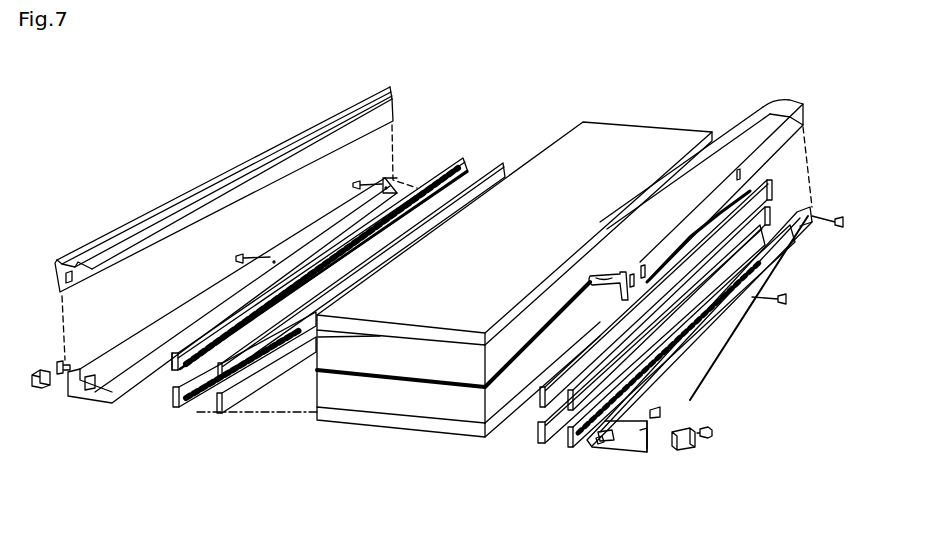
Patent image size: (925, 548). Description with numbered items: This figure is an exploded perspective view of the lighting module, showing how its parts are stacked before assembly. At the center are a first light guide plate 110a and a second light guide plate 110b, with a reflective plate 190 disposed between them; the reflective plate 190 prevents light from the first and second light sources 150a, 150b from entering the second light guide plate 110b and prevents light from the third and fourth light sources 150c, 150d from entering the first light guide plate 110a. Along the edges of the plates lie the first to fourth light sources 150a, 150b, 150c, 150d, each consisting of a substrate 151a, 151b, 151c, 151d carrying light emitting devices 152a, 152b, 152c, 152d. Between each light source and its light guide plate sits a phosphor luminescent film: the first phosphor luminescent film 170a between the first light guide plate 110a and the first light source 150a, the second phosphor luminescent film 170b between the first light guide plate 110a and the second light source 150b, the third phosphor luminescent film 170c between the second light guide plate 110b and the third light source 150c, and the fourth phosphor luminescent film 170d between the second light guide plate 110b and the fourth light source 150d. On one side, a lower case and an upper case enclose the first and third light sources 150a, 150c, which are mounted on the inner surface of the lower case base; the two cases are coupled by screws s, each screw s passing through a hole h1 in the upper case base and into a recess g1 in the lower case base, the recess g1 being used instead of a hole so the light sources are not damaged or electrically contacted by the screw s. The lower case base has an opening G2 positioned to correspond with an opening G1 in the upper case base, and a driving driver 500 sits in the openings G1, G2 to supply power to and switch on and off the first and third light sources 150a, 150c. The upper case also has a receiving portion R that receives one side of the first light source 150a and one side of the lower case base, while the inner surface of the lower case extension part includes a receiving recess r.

The first light guide plate 110a is at (380, 336).
The second light guide plate 110b is at (320, 413).
The first light source 150a is at (602, 295).
The substrate 151a is at (542, 390).
The light emitting device 152a is at (568, 395).
The second light source 150b is at (280, 264).
The substrate 151b is at (173, 357).
The light emitting device 152b is at (190, 355).
The third light source 150c is at (649, 373).
The substrate 151c is at (580, 450).
The light emitting device 152c is at (567, 445).
The fourth light source 150d is at (219, 397).
The substrate 151d is at (178, 402).
The light emitting device 152d is at (187, 405).
The first phosphor luminescent film 170a is at (540, 392).
The second phosphor luminescent film 170b is at (253, 380).
The third phosphor luminescent film 170c is at (537, 440).
The fourth phosphor luminescent film 170d is at (219, 413).
The reflective plate 190 is at (427, 388).
The driving driver 500 is at (697, 444).
The opening G1 is at (629, 280).
The opening G2 is at (652, 440).
The receiving portion R is at (592, 280).
The hole h1 is at (643, 265).
The recess g1 is at (655, 412).
The receiving recess r is at (600, 444).
The screw s is at (712, 432).